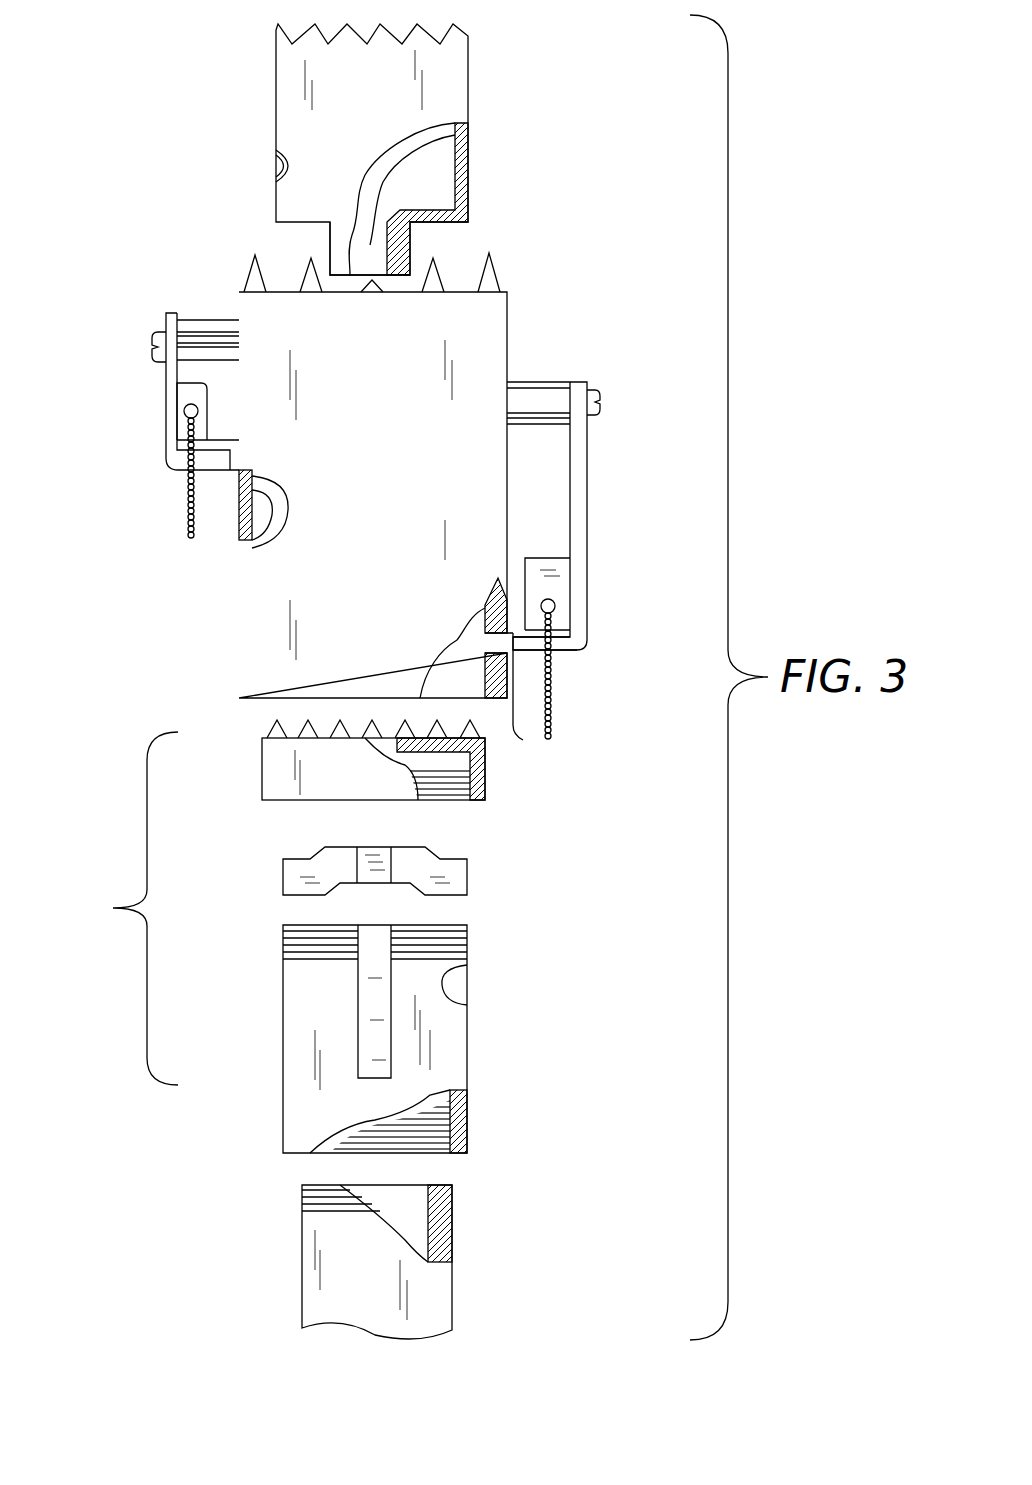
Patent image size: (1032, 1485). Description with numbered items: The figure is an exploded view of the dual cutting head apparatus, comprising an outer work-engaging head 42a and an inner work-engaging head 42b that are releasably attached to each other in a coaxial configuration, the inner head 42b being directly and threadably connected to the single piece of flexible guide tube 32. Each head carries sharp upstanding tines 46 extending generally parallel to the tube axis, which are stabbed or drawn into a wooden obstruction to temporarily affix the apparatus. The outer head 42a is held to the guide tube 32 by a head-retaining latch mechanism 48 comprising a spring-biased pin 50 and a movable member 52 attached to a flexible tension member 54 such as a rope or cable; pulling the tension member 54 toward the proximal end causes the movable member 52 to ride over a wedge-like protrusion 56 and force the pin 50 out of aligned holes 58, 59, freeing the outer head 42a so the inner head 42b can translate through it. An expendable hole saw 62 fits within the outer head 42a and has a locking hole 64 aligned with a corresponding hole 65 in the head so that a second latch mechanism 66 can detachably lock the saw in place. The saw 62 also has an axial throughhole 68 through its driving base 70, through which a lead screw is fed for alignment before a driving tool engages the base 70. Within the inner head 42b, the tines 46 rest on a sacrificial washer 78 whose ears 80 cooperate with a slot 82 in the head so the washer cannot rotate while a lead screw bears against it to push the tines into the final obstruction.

The guide tube 32 is at (416, 1262).
The outer work-engaging head 42a is at (537, 343).
The inner work-engaging head 42b is at (113, 908).
The tines 46 is at (493, 270).
The head-retaining latch mechanism 48 is at (608, 486).
The spring-biased pin 50 is at (578, 643).
The movable member 52 is at (570, 562).
The flexible tension member 54 is at (188, 490).
The wedge-like protrusion 56 is at (524, 705).
The hole 58 is at (490, 644).
The hole 59 is at (462, 981).
The hole saw 62 is at (290, 100).
The locking hole 64 is at (275, 168).
The corresponding hole 65 is at (252, 490).
The second latch mechanism 66 is at (132, 387).
The axial throughhole 68 is at (462, 140).
The driving base 70 is at (335, 237).
The sacrificial washer 78 is at (290, 875).
The ears 80 is at (377, 855).
The slot 82 is at (375, 937).